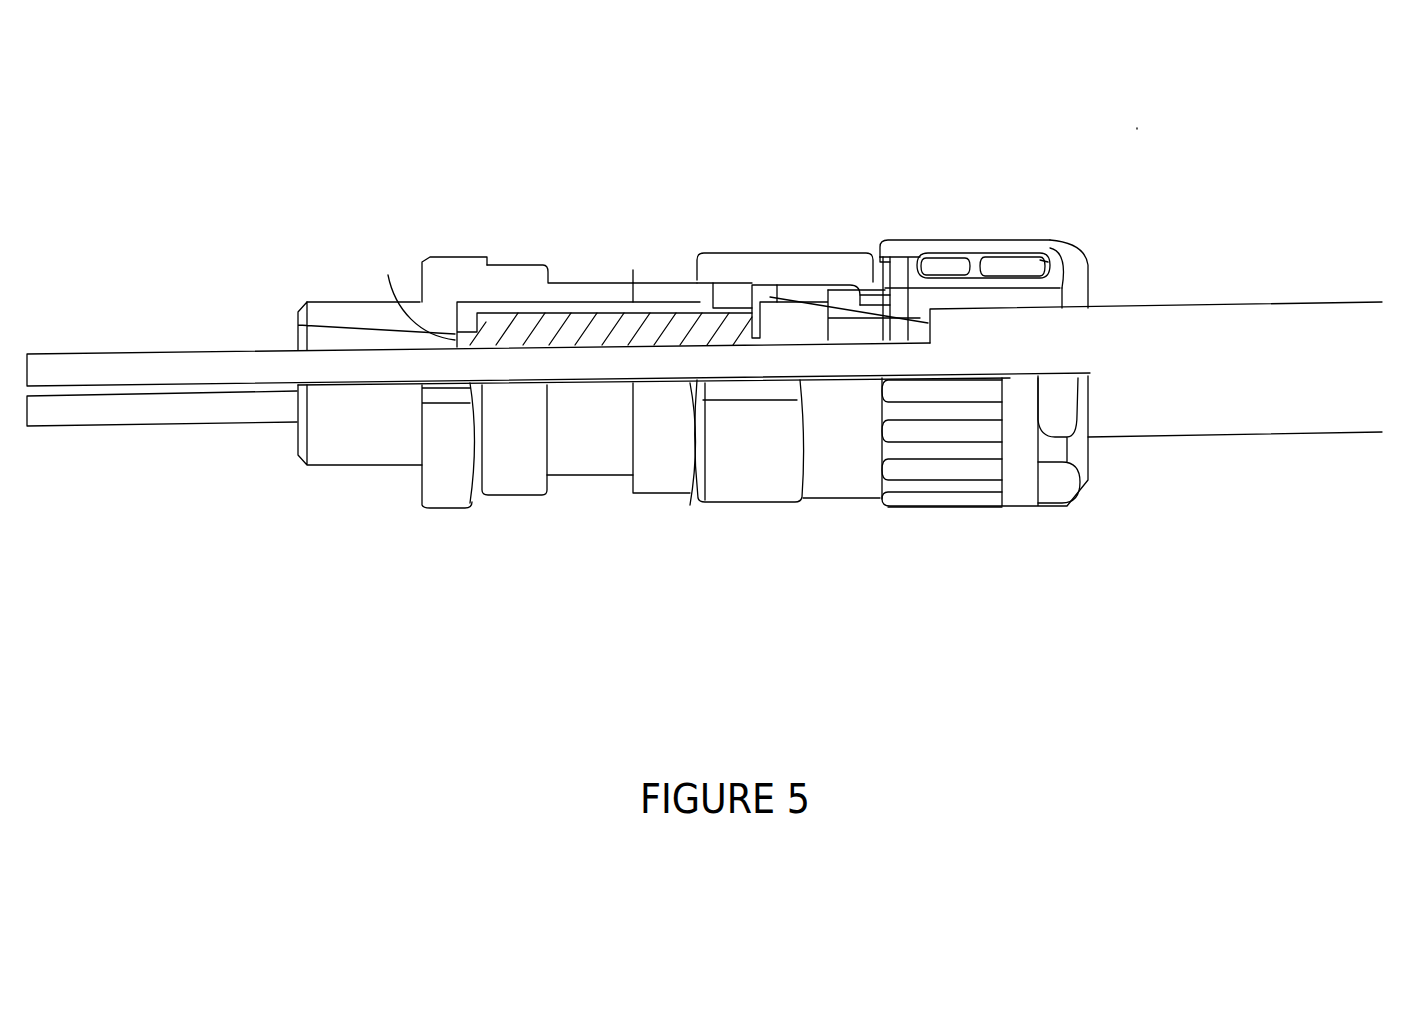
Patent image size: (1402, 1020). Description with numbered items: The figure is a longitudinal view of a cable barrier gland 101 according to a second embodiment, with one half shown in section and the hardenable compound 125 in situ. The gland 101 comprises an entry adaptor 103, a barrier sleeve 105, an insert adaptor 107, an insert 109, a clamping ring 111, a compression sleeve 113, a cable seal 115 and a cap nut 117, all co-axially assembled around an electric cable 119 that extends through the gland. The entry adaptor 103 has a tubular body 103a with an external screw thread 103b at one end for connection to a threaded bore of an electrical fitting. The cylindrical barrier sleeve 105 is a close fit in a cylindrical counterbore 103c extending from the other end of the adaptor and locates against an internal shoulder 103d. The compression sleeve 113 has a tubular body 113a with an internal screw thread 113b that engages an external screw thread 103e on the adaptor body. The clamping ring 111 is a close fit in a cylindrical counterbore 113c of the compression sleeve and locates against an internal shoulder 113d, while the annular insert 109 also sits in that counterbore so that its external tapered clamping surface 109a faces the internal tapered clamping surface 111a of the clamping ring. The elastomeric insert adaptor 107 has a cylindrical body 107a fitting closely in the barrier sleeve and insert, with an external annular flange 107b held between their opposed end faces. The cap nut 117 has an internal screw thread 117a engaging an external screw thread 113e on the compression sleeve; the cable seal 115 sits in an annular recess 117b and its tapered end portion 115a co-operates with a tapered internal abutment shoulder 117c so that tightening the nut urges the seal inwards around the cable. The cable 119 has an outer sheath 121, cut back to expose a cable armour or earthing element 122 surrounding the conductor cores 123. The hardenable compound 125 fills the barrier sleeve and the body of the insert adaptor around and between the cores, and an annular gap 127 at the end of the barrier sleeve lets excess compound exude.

The cable barrier gland 101 is at (1142, 122).
The entry adaptor 103 is at (440, 514).
The tubular body 103a is at (357, 447).
The external screw thread 103b is at (343, 300).
The cylindrical counterbore 103c is at (493, 284).
The internal shoulder 103d is at (446, 290).
The external screw thread 103e is at (633, 280).
The barrier sleeve 105 is at (584, 291).
The insert adaptor 107 is at (680, 296).
The cylindrical body 107a is at (702, 318).
The external annular flange 107b is at (713, 280).
The insert 109 is at (742, 294).
The external tapered clamping surface 109a is at (777, 300).
The clamping ring 111 is at (827, 286).
The internal tapered clamping surface 111a is at (797, 285).
The compression sleeve 113 is at (760, 505).
The tubular body 113a is at (813, 477).
The internal screw thread 113b is at (645, 290).
The cylindrical counterbore 113c is at (797, 290).
The internal shoulder 113d is at (878, 290).
The external screw thread 113e is at (910, 256).
The cable seal 115 is at (983, 256).
The tapered end portion 115a is at (1045, 270).
The cap nut 117 is at (1082, 233).
The internal screw thread 117a is at (905, 250).
The annular recess 117b is at (1027, 252).
The internal abutment shoulder 117c is at (1082, 262).
The electric cable 119 is at (1293, 410).
The outer sheath 121 is at (1172, 437).
The cable armour or earthing element 122 is at (860, 337).
The conductor cores 123 is at (88, 346).
The hardenable compound 125 is at (547, 324).
The annular gap 127 is at (403, 284).